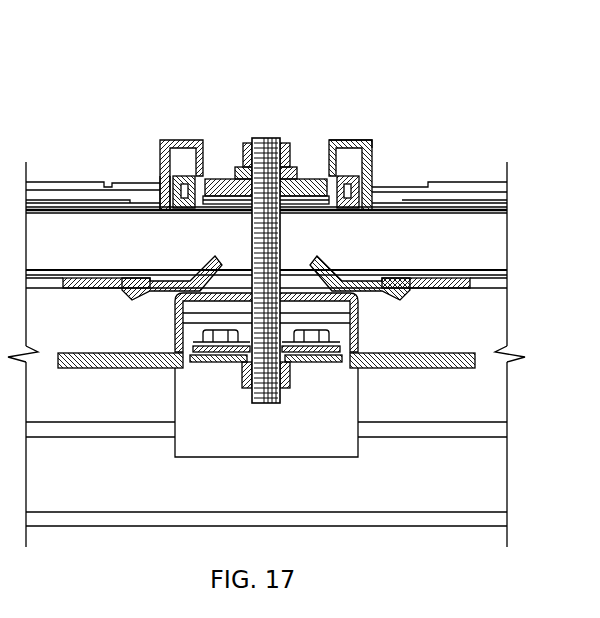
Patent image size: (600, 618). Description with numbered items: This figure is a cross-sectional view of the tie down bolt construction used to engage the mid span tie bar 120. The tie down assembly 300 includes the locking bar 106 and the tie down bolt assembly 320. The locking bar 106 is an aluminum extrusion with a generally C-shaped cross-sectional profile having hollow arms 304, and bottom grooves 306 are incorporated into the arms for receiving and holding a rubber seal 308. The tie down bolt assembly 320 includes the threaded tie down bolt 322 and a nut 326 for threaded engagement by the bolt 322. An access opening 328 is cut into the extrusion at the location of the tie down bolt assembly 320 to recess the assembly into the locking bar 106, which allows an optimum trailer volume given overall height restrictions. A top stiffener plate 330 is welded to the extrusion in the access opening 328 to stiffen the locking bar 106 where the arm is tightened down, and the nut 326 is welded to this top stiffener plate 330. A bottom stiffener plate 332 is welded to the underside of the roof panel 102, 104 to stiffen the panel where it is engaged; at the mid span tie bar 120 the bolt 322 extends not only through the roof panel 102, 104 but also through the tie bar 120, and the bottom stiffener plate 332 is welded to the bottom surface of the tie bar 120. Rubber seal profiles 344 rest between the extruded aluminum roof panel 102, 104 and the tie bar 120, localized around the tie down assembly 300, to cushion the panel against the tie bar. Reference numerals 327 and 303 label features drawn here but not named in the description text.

The tie down assembly 300 is at (229, 108).
The tie down bolt assembly 320 is at (271, 108).
The nut 326 is at (247, 138).
The left washer bar 327 is at (212, 178).
The top stiffener plate 330 is at (297, 178).
The access opening 328 is at (317, 142).
The hollow arms 304 is at (161, 142).
The locking bar 106 is at (370, 142).
The rubber seal 308 is at (161, 170).
The bottom grooves 306 is at (160, 184).
The base plate 303 is at (213, 204).
The threaded tie down bolt 322 is at (254, 233).
The rubber seal profiles 344 is at (193, 278).
The mid span tie bar 120 is at (358, 318).
The roof panel 104 is at (475, 238).
The roof panel 102 is at (473, 268).
The bottom stiffener plate 332 is at (320, 360).